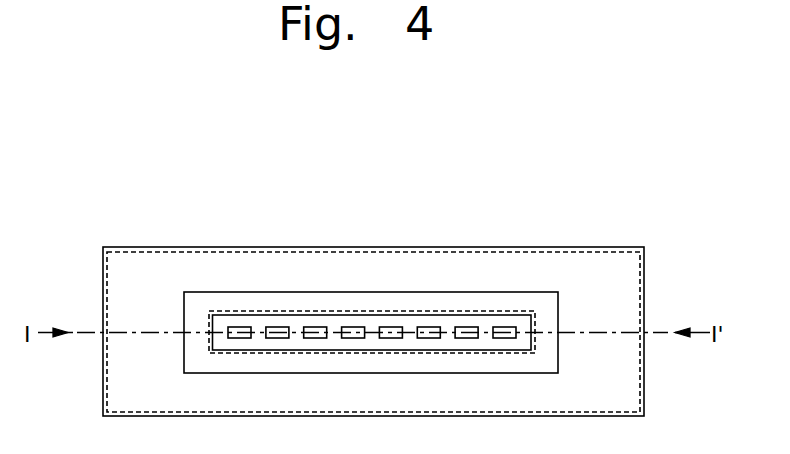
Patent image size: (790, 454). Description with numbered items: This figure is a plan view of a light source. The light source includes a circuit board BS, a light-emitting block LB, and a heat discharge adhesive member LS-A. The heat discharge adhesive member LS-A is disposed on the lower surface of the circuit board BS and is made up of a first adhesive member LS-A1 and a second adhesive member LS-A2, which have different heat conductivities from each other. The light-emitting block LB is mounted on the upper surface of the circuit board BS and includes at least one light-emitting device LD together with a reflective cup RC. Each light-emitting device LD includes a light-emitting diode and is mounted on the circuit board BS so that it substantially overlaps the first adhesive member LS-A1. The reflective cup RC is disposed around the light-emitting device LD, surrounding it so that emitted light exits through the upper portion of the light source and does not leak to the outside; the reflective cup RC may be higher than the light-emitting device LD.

The heat discharge adhesive member LS-A is at (360, 178).
The first adhesive member LS-A1 is at (328, 311).
The second adhesive member LS-A2 is at (240, 252).
The circuit board BS is at (418, 264).
The light-emitting block LB is at (542, 179).
The light-emitting device LD is at (463, 327).
The reflective cup RC is at (527, 292).